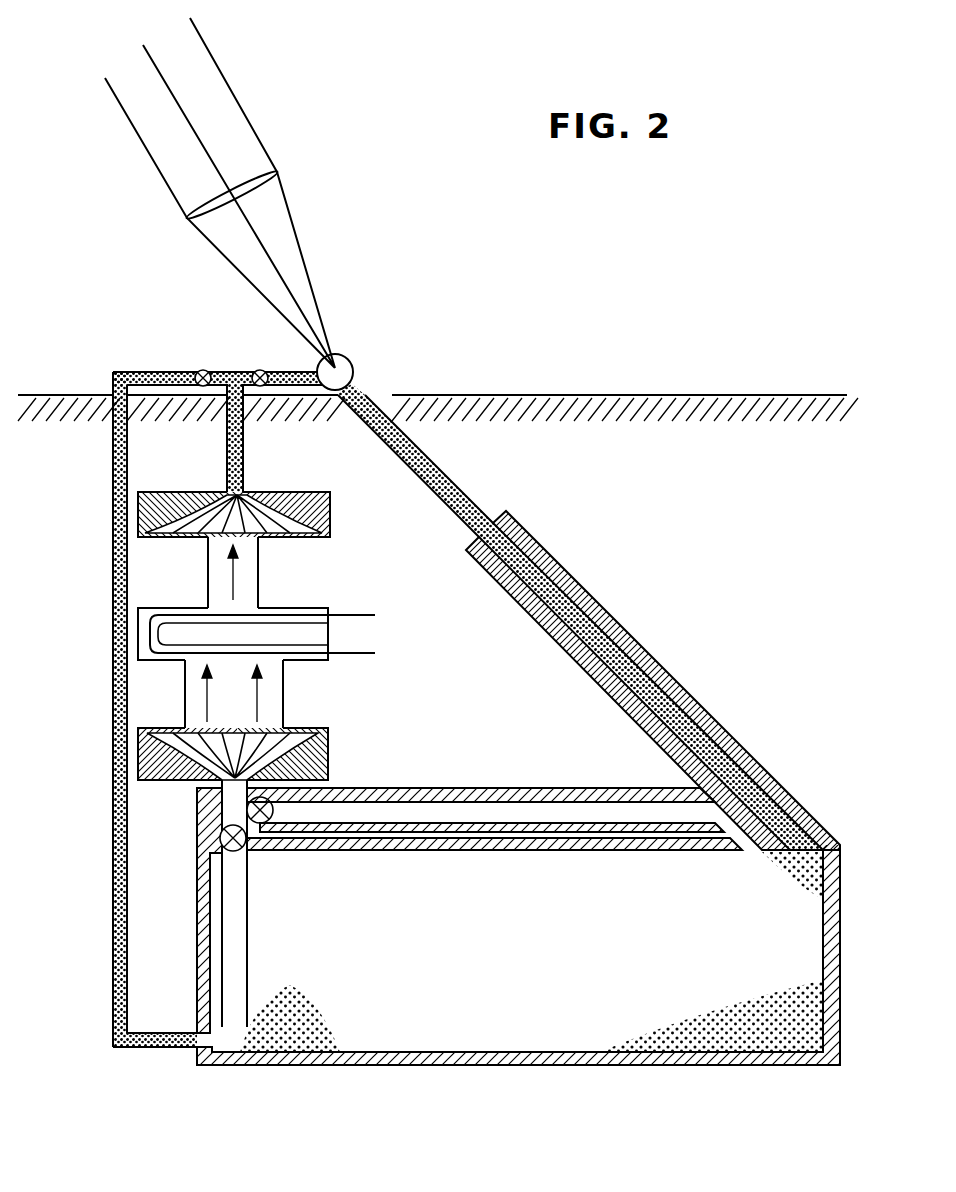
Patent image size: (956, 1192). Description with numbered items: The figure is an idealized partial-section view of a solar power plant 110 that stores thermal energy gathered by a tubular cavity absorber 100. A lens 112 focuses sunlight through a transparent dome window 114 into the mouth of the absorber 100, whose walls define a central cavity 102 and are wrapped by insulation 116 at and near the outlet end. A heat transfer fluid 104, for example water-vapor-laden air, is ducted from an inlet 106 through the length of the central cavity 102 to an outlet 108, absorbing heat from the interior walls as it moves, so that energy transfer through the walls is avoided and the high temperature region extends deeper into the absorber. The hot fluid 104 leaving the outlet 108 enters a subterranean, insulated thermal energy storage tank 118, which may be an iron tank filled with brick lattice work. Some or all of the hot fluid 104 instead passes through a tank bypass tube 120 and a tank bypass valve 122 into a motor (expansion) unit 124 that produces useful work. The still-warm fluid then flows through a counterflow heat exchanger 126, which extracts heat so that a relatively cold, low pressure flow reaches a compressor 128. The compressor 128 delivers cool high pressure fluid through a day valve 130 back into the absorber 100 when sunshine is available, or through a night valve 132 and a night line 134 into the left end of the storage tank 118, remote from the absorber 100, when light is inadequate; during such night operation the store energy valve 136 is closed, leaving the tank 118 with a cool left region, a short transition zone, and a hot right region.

The absorber 100 is at (495, 498).
The central cavity 102 is at (448, 500).
The heat transfer fluid 104 is at (425, 466).
The inlet 106 is at (283, 388).
The outlet 108 is at (797, 825).
The solar power plant 110 is at (88, 753).
The lens 112 is at (255, 181).
The transparent dome window 114 is at (348, 362).
The insulation 116 is at (615, 615).
The thermal energy storage tank 118 is at (527, 958).
The tank bypass tube 120 is at (485, 812).
The tank bypass valve 122 is at (247, 809).
The motor (expansion) unit 124 is at (328, 738).
The counterflow heat exchanger 126 is at (328, 635).
The compressor 128 is at (307, 492).
The day valve 130 is at (259, 371).
The night valve 132 is at (202, 371).
The night line 134 is at (113, 857).
The store energy valve 136 is at (238, 851).